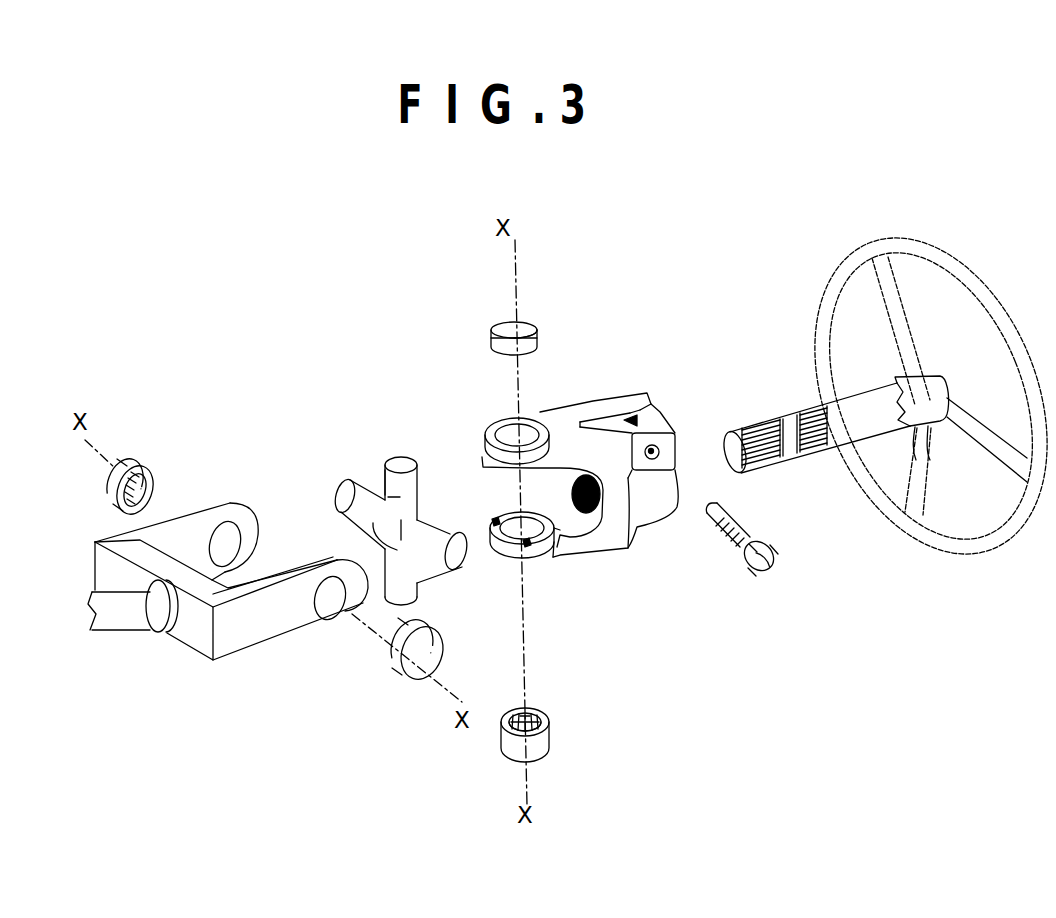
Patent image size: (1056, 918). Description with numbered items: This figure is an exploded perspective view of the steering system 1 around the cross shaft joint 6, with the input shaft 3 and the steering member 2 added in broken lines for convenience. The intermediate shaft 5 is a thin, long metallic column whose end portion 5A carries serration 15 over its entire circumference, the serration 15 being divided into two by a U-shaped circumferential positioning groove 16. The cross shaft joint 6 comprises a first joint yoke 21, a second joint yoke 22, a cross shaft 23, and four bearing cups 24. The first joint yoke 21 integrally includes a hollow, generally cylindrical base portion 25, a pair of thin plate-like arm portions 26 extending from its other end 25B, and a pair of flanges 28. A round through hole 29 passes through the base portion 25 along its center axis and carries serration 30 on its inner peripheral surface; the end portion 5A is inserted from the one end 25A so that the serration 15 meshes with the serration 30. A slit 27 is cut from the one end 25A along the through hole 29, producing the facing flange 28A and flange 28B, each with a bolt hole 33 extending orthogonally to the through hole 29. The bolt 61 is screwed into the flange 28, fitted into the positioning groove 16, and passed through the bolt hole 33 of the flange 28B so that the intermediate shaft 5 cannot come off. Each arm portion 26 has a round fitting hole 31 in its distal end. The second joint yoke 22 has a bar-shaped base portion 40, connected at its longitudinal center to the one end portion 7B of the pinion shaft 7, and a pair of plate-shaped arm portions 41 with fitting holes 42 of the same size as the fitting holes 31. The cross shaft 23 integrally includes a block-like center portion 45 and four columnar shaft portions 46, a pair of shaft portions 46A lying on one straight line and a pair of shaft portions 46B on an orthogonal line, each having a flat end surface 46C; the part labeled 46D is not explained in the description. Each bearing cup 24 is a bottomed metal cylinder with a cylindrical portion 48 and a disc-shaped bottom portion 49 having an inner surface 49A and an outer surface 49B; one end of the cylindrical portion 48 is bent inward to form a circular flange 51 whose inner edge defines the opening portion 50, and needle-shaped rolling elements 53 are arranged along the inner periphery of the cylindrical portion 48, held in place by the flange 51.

The steering system 1 is at (389, 298).
The steering member 2 is at (990, 552).
The input shaft 3 is at (908, 462).
The intermediate shaft 5 is at (890, 440).
The end portion 5A is at (735, 458).
The cross shaft joint 6 is at (366, 394).
The pinion shaft 7 is at (121, 640).
The one end portion 7B is at (155, 622).
The serration 15 is at (755, 420).
The positioning groove 16 is at (800, 450).
The first joint yoke 21 is at (598, 554).
The second joint yoke 22 is at (255, 655).
The cross shaft 23 is at (404, 461).
The bearing cup 24 is at (570, 788).
The base portion 25 is at (672, 495).
The one end 25A is at (650, 402).
The other end 25B is at (610, 522).
The arm portion 26 is at (487, 446).
The slit 27 is at (652, 413).
The flange 28 is at (674, 328).
The flange 28A is at (608, 440).
The flange 28B is at (598, 405).
The through hole 29 is at (580, 548).
The serration 30 is at (583, 462).
The fitting hole 31 is at (506, 424).
The bolt hole 33 is at (657, 452).
The base portion 40 is at (208, 645).
The arm portion 41 is at (228, 503).
The fitting hole 42 is at (236, 546).
The center portion 45 is at (420, 532).
The shaft portion 46 is at (385, 536).
The shaft portion 46A is at (383, 490).
The shaft portion 46B is at (341, 496).
The end surface 46C is at (418, 460).
The trunnion shoulder 46D is at (418, 497).
The cylindrical portion 48 is at (490, 337).
The bottom portion 49 is at (537, 325).
The inner surface 49A is at (108, 491).
The outer surface 49B is at (497, 322).
The opening portion 50 is at (142, 478).
The flange 51 is at (115, 512).
The rolling element 53 is at (148, 491).
The bolt 61 is at (735, 548).